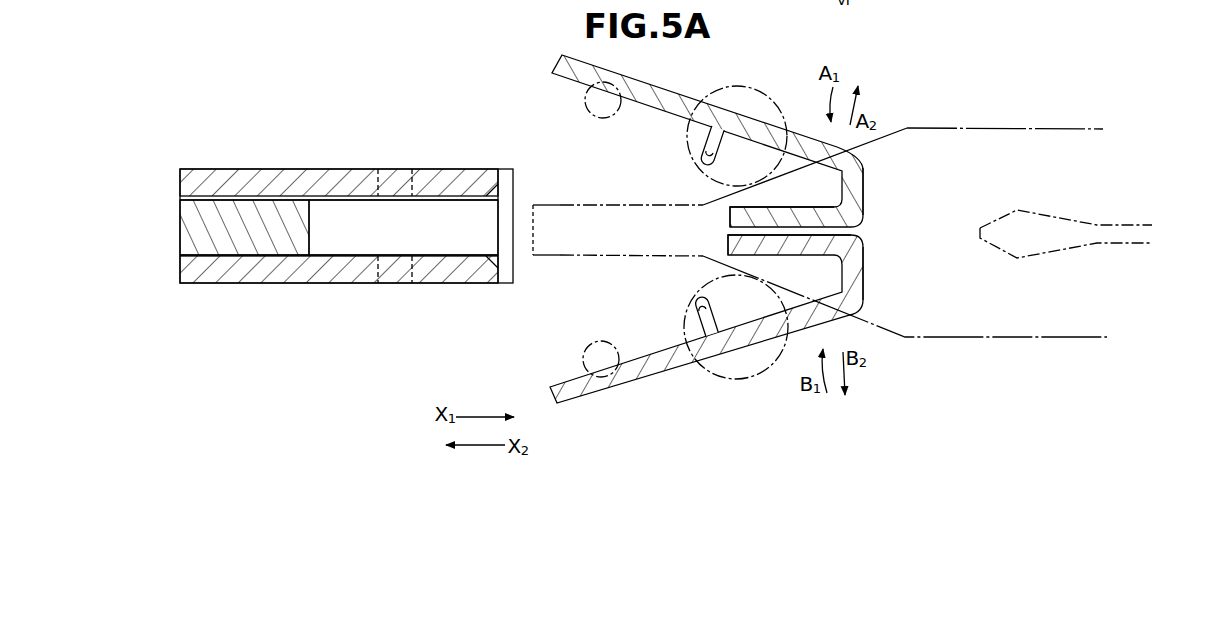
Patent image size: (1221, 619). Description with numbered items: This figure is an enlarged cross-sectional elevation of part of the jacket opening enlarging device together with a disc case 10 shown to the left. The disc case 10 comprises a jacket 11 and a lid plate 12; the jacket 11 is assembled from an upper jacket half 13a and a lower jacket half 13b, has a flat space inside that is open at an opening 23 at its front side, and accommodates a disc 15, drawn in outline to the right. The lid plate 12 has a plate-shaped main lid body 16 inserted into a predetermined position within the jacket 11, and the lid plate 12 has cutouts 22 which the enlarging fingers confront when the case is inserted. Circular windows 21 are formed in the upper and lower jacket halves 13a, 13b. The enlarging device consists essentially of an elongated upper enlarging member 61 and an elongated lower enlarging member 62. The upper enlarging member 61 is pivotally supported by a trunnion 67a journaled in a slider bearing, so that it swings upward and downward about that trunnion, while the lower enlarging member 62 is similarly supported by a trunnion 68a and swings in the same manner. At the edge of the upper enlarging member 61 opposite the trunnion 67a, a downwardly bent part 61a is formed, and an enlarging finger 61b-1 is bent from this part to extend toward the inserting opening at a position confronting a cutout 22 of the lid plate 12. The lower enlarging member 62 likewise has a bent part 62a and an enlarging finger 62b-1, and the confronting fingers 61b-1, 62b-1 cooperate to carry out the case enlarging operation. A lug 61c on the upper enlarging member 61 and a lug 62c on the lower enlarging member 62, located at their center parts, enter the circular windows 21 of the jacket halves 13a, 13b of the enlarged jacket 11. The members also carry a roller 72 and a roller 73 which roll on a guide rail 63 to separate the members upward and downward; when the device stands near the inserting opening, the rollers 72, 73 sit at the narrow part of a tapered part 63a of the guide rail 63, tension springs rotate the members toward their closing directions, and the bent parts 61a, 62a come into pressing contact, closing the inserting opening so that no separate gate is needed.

The disc case 10 is at (313, 166).
The jacket 11 is at (296, 284).
The lid plate 12 is at (516, 192).
The upper jacket half 13a is at (237, 169).
The lower jacket half 13b is at (225, 283).
The disc 15 is at (1073, 222).
The main lid body 16 is at (183, 229).
The circular window 21 is at (386, 168).
The cutout 22 is at (478, 237).
The opening 23 is at (459, 245).
The upper enlarging member 61 is at (657, 85).
The downwardly bent part 61a is at (857, 186).
The enlarging finger 61b-1 is at (801, 214).
The lug 61c is at (727, 127).
The lower enlarging member 62 is at (669, 371).
The bent part 62a is at (857, 268).
The enlarging finger 62b-1 is at (728, 244).
The lug 62c is at (697, 319).
The guide rail 63 is at (1012, 128).
The tapered part 63a is at (883, 133).
The trunnion 67a is at (586, 100).
The trunnion 68a is at (591, 348).
The roller 72 is at (766, 95).
The roller 73 is at (734, 379).